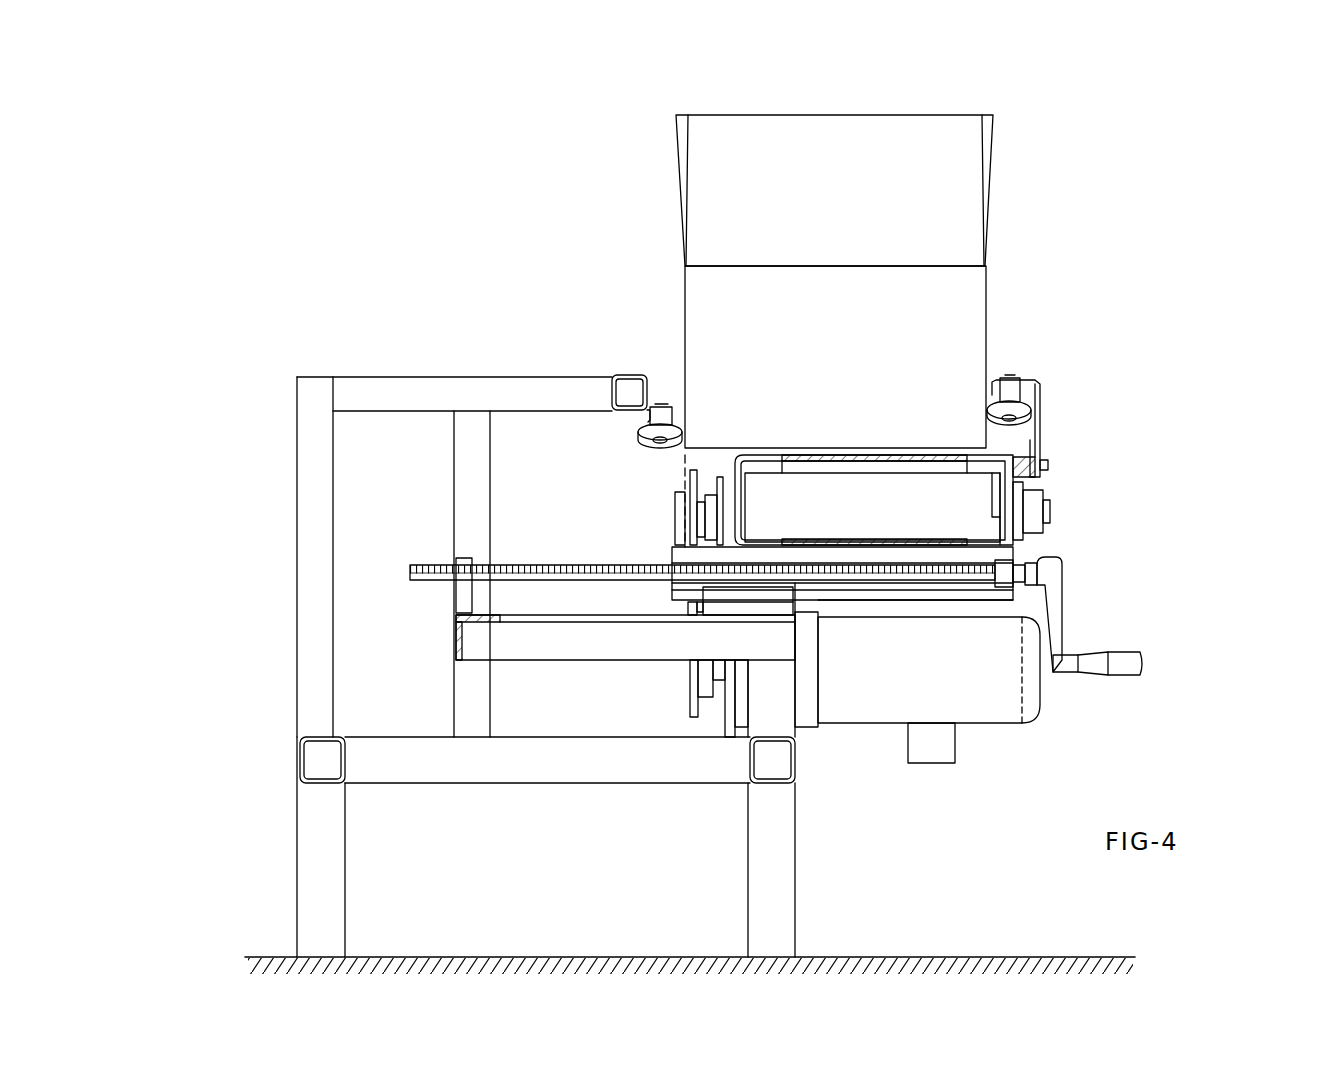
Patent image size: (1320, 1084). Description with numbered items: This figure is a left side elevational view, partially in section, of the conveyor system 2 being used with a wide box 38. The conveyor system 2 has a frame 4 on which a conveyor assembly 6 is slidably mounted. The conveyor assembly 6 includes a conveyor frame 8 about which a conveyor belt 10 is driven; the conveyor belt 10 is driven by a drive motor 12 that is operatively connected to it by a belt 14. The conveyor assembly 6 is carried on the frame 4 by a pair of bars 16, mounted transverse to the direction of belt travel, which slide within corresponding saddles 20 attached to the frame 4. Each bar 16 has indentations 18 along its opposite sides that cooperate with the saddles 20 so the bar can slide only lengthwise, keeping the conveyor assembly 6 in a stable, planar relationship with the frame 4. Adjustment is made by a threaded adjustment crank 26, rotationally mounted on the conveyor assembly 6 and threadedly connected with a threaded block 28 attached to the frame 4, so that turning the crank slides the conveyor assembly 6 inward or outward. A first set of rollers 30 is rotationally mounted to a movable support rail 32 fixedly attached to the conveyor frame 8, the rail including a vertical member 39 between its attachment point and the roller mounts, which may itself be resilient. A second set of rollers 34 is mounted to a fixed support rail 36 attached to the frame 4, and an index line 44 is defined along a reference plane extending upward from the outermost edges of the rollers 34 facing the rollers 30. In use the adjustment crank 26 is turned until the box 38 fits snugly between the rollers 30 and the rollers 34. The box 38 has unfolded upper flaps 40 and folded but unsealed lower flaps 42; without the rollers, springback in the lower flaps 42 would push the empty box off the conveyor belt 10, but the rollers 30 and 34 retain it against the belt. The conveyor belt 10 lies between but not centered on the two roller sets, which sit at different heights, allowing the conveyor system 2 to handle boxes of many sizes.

The conveyor system 2 is at (286, 282).
The frame 4 is at (298, 606).
The conveyor assembly 6 is at (946, 340).
The conveyor frame 8 is at (1000, 455).
The conveyor belt 10 is at (858, 455).
The drive motor 12 is at (983, 713).
The belt 14 is at (690, 703).
The bars 16 is at (918, 598).
The indentations 18 is at (960, 597).
The saddles 20 is at (763, 605).
The threaded adjustment crank 26 is at (603, 563).
The threaded block 28 is at (462, 590).
The first set of rollers 30 is at (990, 410).
The movable support rail 32 is at (1042, 393).
The second set of rollers 34 is at (680, 438).
The fixed support rail 36 is at (648, 412).
The box 38 is at (968, 293).
The vertical member 39 is at (1040, 430).
The upper flaps 40 is at (720, 182).
The lower flaps 42 is at (797, 450).
The index line 44 is at (683, 460).